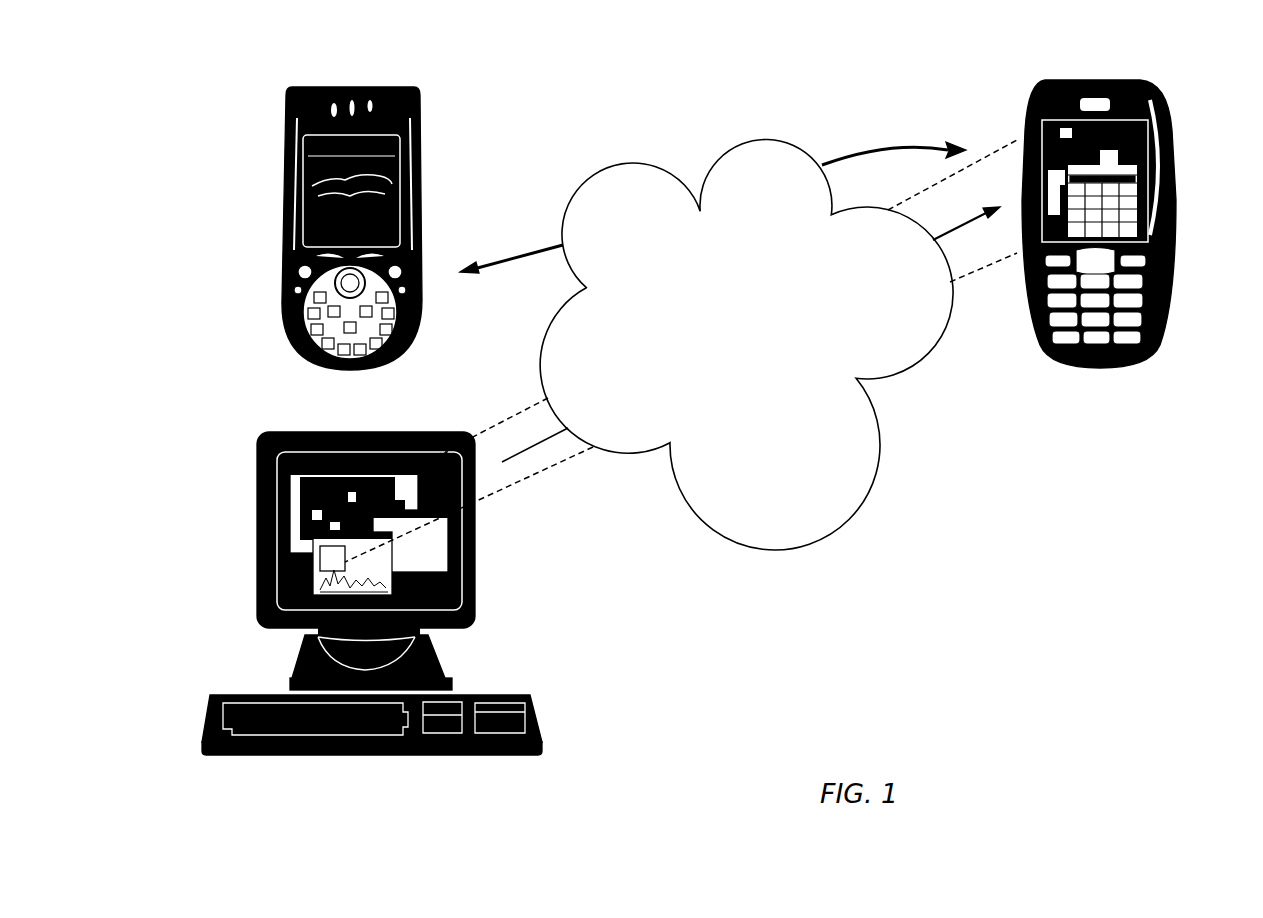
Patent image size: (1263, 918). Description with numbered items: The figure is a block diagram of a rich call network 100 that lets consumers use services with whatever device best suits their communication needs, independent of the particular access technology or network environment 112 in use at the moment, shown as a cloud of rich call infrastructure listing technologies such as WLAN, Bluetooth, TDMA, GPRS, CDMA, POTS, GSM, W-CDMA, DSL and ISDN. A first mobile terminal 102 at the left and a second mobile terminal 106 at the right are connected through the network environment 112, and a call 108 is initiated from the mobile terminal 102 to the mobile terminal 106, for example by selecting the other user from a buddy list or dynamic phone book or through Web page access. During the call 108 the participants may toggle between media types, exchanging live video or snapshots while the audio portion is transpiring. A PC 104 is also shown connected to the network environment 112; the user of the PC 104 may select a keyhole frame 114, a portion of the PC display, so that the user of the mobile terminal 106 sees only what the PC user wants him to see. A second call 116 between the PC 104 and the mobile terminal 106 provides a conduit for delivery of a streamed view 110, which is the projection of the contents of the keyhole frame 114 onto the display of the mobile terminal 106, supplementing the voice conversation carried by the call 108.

The rich call network 100 is at (1085, 668).
The mobile terminal 102 is at (424, 127).
The PC 104 is at (473, 545).
The mobile terminal 106 is at (1158, 333).
The call 108 is at (906, 150).
The streamed view 110 is at (518, 412).
The network environment 112 is at (766, 136).
The keyhole frame 114 is at (277, 537).
The second call 116 is at (544, 442).